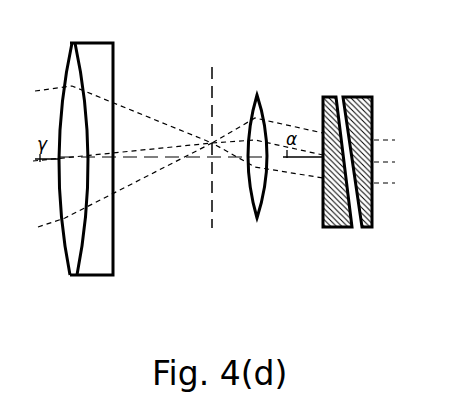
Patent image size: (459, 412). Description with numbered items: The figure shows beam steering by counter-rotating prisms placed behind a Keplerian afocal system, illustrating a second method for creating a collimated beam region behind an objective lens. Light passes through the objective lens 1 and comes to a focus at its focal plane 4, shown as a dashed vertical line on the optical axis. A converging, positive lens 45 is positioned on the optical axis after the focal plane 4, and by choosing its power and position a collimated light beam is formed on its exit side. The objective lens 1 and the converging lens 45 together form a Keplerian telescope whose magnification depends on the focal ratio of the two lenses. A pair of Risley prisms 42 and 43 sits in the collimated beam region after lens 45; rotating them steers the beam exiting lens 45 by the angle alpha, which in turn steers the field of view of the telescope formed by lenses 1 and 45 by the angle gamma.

The objective lens 1 is at (113, 73).
The focal plane 4 is at (213, 107).
The converging lens 45 is at (256, 219).
The Risley prism 42 is at (332, 228).
The Risley prism 43 is at (368, 228).